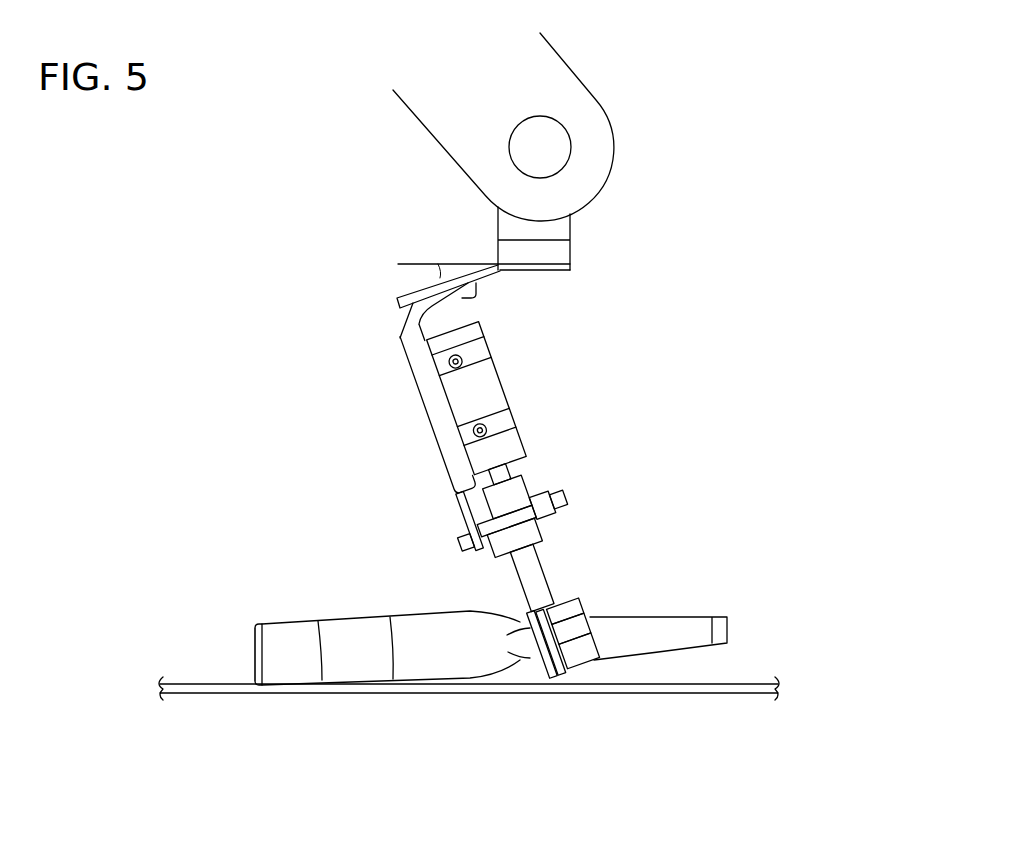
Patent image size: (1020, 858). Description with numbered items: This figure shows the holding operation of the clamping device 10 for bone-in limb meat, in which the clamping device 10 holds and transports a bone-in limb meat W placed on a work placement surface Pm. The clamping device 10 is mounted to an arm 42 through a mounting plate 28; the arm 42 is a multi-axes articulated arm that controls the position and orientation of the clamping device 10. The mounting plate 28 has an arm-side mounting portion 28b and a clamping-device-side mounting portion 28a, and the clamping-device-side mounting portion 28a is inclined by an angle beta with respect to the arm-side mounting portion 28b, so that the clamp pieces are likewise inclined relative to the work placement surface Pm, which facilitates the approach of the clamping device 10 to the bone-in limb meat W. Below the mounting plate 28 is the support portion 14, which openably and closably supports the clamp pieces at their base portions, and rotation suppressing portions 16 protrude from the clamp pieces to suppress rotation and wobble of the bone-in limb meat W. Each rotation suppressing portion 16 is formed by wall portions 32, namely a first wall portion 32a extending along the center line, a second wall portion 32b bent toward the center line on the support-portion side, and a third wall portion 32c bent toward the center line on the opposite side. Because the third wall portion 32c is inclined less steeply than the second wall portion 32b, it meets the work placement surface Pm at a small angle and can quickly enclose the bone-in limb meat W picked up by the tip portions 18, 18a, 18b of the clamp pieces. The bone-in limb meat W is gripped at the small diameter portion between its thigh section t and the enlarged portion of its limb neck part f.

The arm 42 is at (601, 118).
The mounting plate 28 is at (539, 367).
The clamping-device-side mounting portion 28a is at (487, 272).
The arm-side mounting portion 28b is at (570, 270).
The support portion 14 is at (500, 393).
The clamping device 10 is at (578, 432).
The rotation suppressing portion 16 is at (572, 593).
The wall portion 32 is at (707, 583).
The first wall portion 32a is at (581, 603).
The second wall portion 32b is at (580, 632).
The third wall portion 32c is at (590, 668).
The tip portion 18 is at (528, 691).
The tip portion 18a is at (562, 676).
The tip portion 18b is at (545, 675).
The bone-in limb meat W is at (370, 612).
The thigh section t is at (298, 622).
The work placement surface Pm is at (223, 690).
The limb neck part f is at (672, 613).